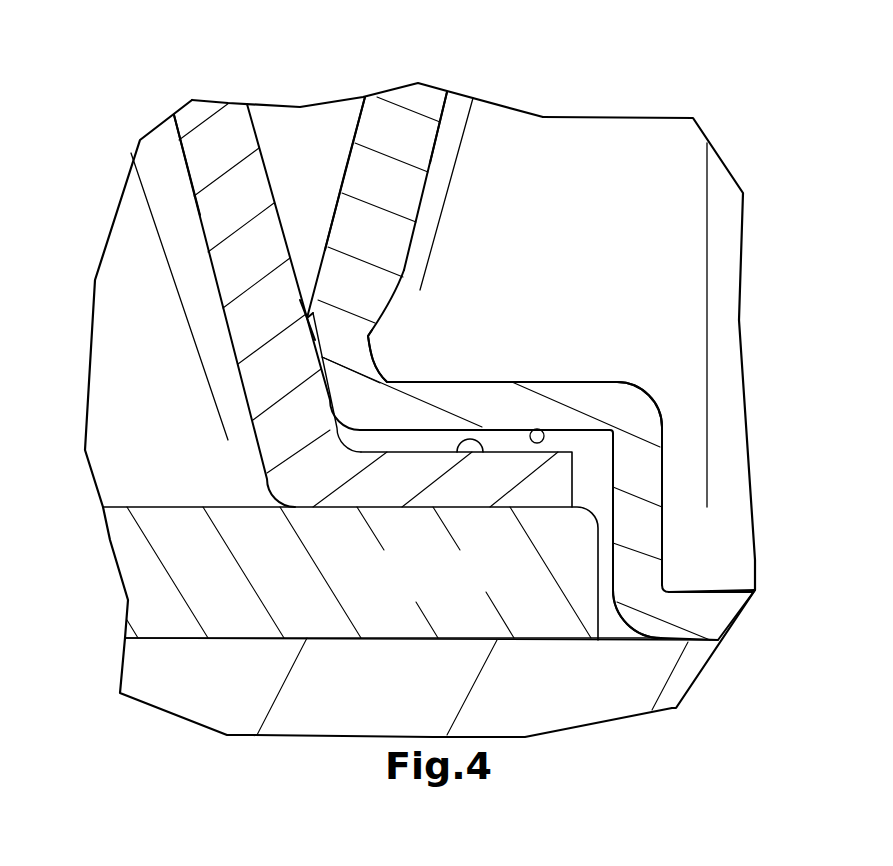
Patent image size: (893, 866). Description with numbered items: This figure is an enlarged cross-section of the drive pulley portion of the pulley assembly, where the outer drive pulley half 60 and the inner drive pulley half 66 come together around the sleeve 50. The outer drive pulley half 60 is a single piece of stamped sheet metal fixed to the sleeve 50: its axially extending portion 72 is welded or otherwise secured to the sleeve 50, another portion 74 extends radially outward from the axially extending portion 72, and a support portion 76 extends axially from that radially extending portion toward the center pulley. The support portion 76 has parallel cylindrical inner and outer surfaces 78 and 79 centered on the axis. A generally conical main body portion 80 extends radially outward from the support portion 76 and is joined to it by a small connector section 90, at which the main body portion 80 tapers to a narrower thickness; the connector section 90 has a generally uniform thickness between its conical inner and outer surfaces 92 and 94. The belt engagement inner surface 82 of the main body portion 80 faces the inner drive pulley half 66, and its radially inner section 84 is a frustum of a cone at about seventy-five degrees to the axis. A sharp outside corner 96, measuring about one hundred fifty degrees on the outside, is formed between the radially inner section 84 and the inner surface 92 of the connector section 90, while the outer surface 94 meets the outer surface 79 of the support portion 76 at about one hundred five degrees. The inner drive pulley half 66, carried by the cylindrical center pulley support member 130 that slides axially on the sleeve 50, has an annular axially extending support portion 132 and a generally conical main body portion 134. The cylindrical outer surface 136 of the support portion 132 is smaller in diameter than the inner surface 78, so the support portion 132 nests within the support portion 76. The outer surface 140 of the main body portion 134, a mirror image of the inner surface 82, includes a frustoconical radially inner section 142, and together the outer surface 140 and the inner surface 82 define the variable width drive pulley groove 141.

The sleeve 50 is at (193, 680).
The outer drive pulley half 60 is at (622, 117).
The inner drive pulley half 66 is at (183, 102).
The axially extending portion 72 is at (713, 603).
The radially extending portion 74 is at (633, 507).
The support portion 76 is at (497, 380).
The inner surface of support portion 78 is at (533, 425).
The outer surface of support portion 79 is at (597, 380).
The main body portion 80 is at (433, 148).
The inner surface 82 is at (343, 173).
The radially inner section 84 is at (332, 225).
The connector section 90 is at (350, 358).
The inner surface of connector section 92 is at (323, 383).
The outer surface of connector section 94 is at (372, 362).
The sharp outside corner 96 is at (313, 323).
The center pulley support member 130 is at (207, 577).
The support portion 132 is at (397, 480).
The main body portion 134 is at (183, 168).
The cylindrical outer surface 136 is at (482, 447).
The outer surface 140 is at (257, 133).
The variable width drive pulley groove 141 is at (343, 113).
The radially inner section 142 is at (317, 337).